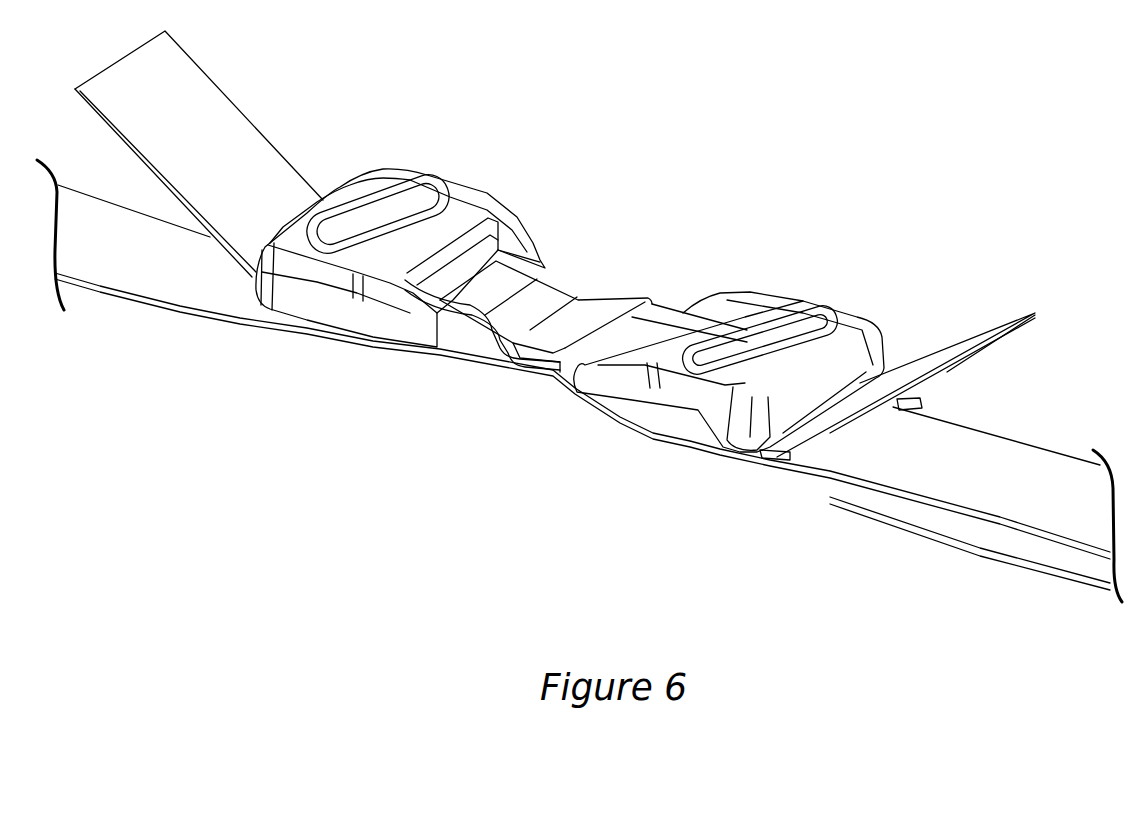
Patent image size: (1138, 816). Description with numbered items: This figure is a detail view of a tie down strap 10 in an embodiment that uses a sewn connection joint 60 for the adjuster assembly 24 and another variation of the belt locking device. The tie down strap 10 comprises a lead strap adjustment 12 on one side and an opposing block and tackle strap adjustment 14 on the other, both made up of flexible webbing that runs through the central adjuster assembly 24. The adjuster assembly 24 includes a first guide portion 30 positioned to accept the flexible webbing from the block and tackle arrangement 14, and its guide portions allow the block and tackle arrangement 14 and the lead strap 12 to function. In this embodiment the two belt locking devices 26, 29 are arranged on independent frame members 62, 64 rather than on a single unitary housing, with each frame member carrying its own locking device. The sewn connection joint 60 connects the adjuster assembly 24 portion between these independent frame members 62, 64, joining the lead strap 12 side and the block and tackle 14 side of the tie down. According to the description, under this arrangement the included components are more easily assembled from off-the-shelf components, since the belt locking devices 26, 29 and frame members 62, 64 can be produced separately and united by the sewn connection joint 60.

The tie down strap 10 is at (579, 319).
The lead strap adjustment 12 is at (140, 347).
The block and tackle strap adjustment 14 is at (1004, 228).
The adjuster assembly 24 is at (570, 326).
The belt locking device 26 is at (783, 328).
The belt locking device 29 is at (398, 220).
The first guide portion 30 is at (787, 458).
The sewn connection joint 60 is at (528, 343).
The independent frame member 62 is at (653, 413).
The independent frame member 64 is at (365, 315).